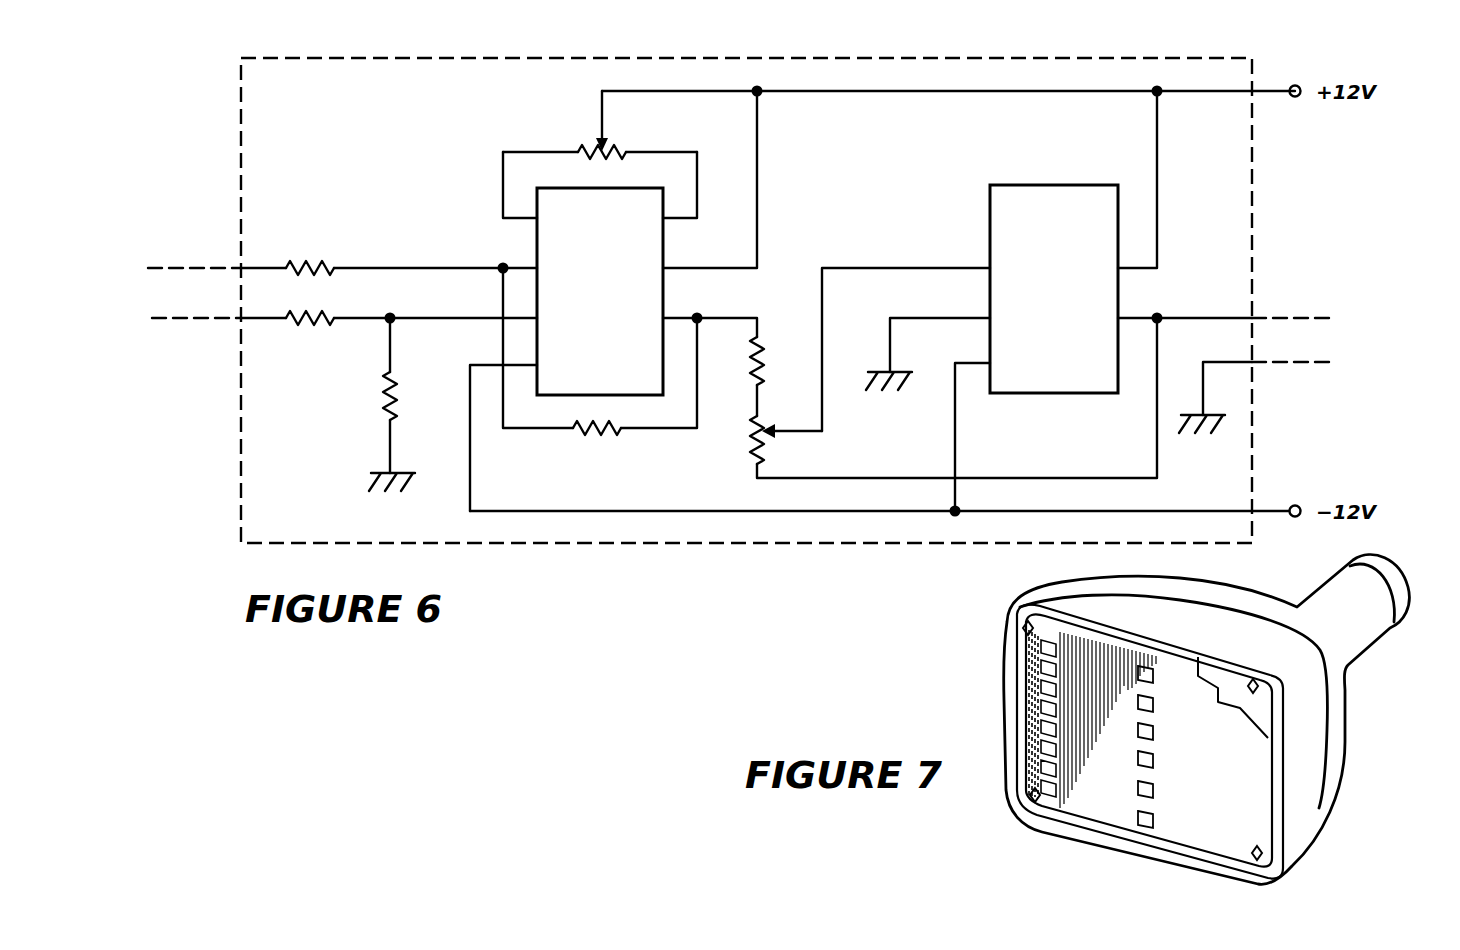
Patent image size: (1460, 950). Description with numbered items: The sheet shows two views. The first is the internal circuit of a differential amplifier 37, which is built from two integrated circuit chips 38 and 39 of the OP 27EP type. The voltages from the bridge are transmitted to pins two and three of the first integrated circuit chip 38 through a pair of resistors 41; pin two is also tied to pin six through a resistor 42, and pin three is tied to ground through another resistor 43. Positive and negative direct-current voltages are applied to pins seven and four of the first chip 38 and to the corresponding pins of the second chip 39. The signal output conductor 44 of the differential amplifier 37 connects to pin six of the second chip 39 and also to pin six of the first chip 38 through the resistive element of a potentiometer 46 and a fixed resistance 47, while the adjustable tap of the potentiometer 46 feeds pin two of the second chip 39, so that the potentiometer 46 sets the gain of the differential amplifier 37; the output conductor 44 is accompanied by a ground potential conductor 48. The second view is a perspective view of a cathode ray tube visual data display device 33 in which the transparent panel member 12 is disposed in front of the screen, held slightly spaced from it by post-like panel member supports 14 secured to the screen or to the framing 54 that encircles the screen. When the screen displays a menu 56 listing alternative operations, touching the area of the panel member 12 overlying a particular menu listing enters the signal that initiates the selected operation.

In FIG. 7, the panel member 12 is at (1027, 653).
In FIG. 7, the panel member supports 14 is at (1254, 678).
In FIG. 7, the visual data display device 33 is at (1365, 748).
In FIG. 6, the differential amplifier 37 is at (604, 544).
In FIG. 6, the integrated circuit chip 38 is at (592, 188).
In FIG. 6, the integrated circuit chip 39 is at (1058, 185).
In FIG. 6, the resistors 41 is at (330, 266).
In FIG. 6, the resistor 42 is at (597, 438).
In FIG. 6, the resistor 43 is at (386, 396).
In FIG. 6, the signal output conductor 44 is at (1265, 318).
In FIG. 6, the potentiometer 46 is at (727, 442).
In FIG. 6, the fixed resistance 47 is at (751, 380).
In FIG. 6, the ground potential conductor 48 is at (1262, 363).
In FIG. 7, the framing 54 is at (1278, 689).
In FIG. 7, the menu 56 is at (1150, 833).